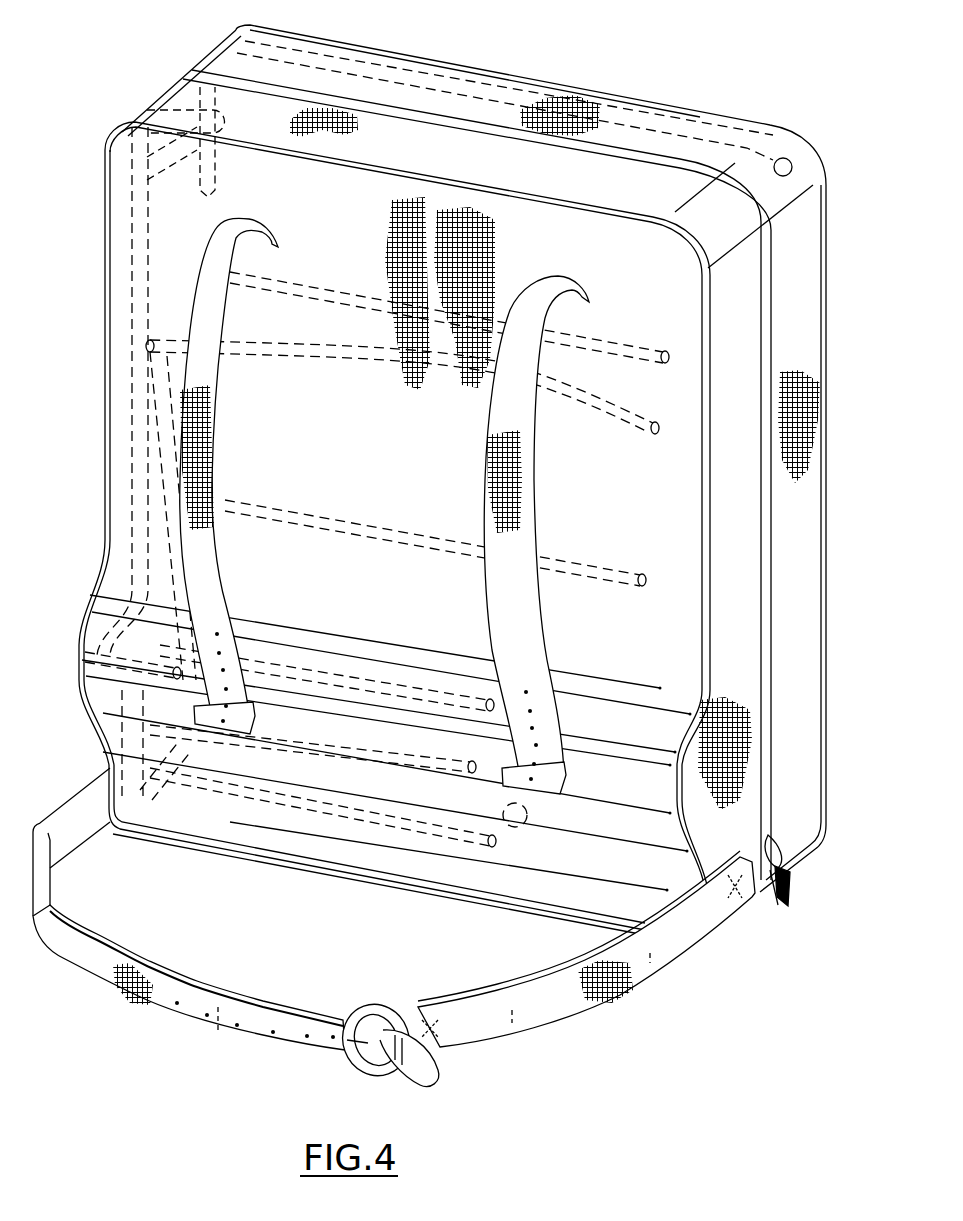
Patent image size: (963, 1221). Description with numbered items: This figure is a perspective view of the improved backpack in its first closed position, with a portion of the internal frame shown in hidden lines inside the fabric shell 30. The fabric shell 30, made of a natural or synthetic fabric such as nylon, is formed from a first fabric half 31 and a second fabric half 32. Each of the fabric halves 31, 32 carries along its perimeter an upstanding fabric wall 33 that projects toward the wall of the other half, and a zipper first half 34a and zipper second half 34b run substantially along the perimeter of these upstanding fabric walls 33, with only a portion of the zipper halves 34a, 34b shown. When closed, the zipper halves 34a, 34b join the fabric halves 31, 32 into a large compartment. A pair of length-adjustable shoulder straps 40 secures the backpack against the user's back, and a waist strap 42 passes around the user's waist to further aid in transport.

The fabric shell 30 is at (102, 61).
The first fabric half 31 is at (107, 377).
The second fabric half 32 is at (827, 256).
The upstanding fabric wall 33 is at (703, 182).
The zipper first half 34a is at (764, 835).
The zipper second half 34b is at (773, 815).
The shoulder straps 40 is at (190, 247).
The waist strap 42 is at (200, 1020).